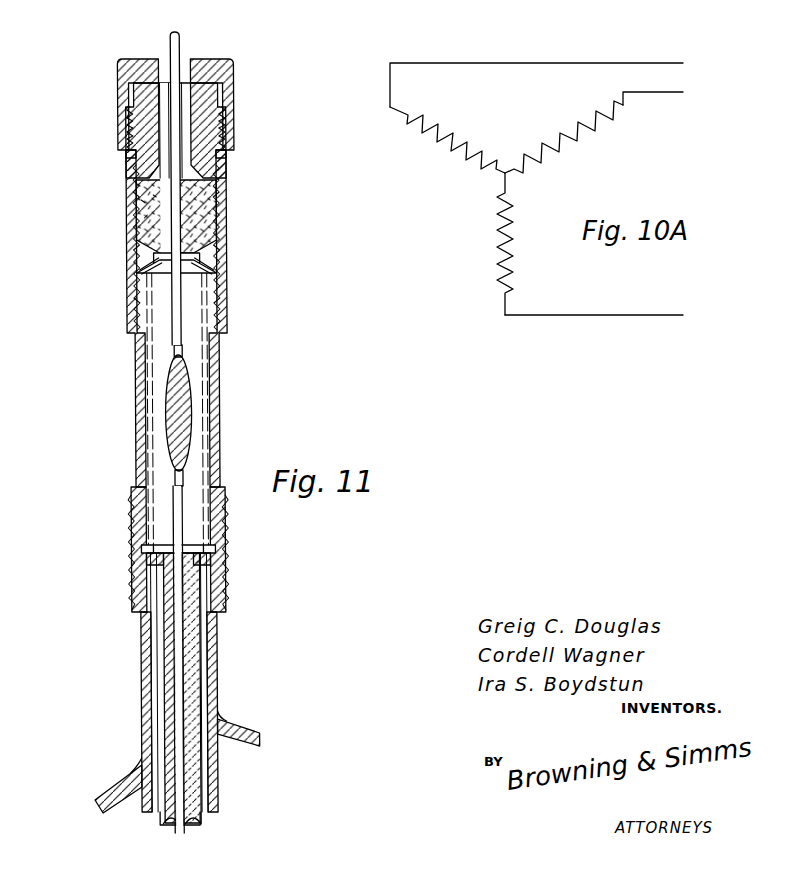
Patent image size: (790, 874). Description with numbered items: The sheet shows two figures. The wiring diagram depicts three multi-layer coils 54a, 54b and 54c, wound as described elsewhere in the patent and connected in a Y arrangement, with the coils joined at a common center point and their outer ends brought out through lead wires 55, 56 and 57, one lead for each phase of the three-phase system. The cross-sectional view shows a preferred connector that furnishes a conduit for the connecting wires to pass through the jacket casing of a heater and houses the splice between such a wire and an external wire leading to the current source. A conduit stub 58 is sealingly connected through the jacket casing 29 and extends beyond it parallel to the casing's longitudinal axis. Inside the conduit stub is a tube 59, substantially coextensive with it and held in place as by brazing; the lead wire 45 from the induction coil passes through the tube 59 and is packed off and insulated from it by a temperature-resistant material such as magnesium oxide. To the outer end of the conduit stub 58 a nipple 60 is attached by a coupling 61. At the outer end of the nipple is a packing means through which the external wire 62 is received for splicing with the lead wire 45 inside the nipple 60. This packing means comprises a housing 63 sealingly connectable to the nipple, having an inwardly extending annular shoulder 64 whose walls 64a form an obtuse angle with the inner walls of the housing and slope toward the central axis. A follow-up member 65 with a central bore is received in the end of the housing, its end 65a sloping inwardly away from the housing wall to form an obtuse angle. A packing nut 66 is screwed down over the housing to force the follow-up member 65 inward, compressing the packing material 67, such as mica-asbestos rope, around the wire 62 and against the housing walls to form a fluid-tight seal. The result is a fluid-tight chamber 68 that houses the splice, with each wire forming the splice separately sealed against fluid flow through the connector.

In FIG. 11, the wire 62 is at (180, 37).
In FIG. 11, the packing nut 66 is at (232, 63).
In FIG. 11, the follow-up member 65 is at (226, 122).
In FIG. 11, the end of follow-up member 65a is at (228, 155).
In FIG. 11, the housing 63 is at (220, 196).
In FIG. 11, the packing material 67 is at (138, 210).
In FIG. 11, the shoulder walls 64a is at (212, 246).
In FIG. 11, the annular shoulder 64 is at (205, 256).
In FIG. 11, the fluid-tight chamber 68 is at (200, 363).
In FIG. 11, the nipple 60 is at (217, 416).
In FIG. 11, the lead wire 45 is at (179, 537).
In FIG. 11, the coupling 61 is at (228, 571).
In FIG. 11, the tube 59 is at (204, 626).
In FIG. 11, the conduit stub 58 is at (222, 670).
In FIG. 11, the jacket casing 29 is at (106, 792).
In FIG. 10A, the lead wire 55 is at (487, 63).
In FIG. 10A, the lead wire 56 is at (674, 89).
In FIG. 10A, the multi-layer coil 54a is at (435, 151).
In FIG. 10A, the multi-layer coil 54b is at (588, 150).
In FIG. 10A, the multi-layer coil 54c is at (490, 260).
In FIG. 10A, the lead wire 57 is at (656, 313).